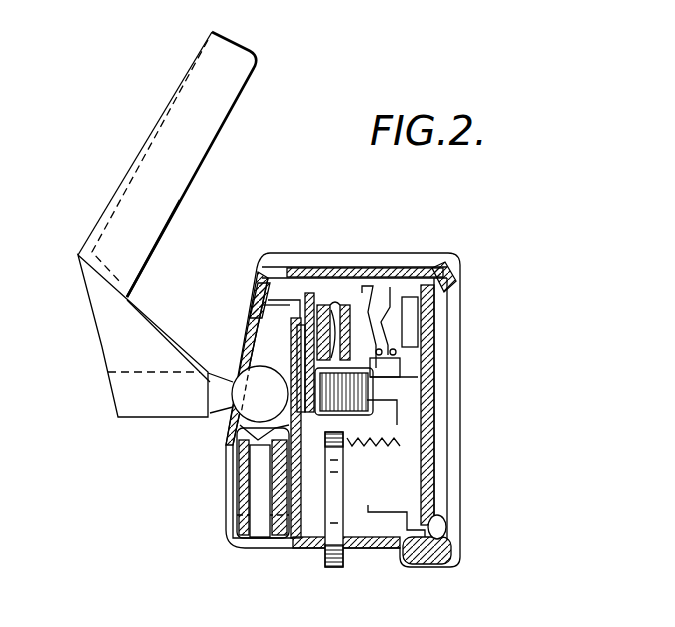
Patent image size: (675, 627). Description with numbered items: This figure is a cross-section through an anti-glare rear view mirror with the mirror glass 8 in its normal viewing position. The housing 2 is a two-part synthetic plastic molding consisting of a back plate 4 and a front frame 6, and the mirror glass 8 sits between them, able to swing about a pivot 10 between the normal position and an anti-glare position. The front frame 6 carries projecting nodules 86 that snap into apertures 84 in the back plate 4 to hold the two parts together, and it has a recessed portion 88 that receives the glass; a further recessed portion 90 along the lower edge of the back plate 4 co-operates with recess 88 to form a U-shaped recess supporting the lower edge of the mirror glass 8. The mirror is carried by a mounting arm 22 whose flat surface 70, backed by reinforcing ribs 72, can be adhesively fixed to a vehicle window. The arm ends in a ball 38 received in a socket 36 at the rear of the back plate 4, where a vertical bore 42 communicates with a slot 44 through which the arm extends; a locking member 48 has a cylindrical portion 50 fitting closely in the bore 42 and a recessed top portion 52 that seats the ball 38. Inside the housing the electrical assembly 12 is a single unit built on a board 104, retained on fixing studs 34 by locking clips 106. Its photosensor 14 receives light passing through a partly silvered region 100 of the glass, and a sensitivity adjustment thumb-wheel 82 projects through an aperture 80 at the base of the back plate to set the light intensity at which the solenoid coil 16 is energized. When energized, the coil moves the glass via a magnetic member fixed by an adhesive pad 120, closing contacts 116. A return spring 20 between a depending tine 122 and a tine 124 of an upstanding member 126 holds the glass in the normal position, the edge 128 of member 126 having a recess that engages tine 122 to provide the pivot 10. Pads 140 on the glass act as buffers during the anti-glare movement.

The housing 2 is at (482, 269).
The back plate part 4 is at (362, 300).
The front frame part 6 is at (455, 296).
The mirror glass 8 is at (433, 372).
The pivot 10 is at (362, 440).
The electrical assembly 12 is at (296, 288).
The photosensor 14 is at (343, 300).
The solenoid coil 16 is at (410, 392).
The return spring 20 is at (405, 500).
The mounting arm 22 is at (107, 343).
The fixing studs 34 is at (256, 298).
The socket 36 is at (216, 480).
The ball member 38 is at (252, 366).
The vertical bore 42 is at (265, 313).
The slot 44 is at (232, 468).
The locking member 48 is at (230, 513).
The cylindrical portion 50 is at (233, 498).
The recessed top portion 52 is at (238, 432).
The flat surface 70 is at (124, 175).
The reinforcing ribs 72 is at (178, 178).
The aperture 80 is at (357, 550).
The sensitivity adjustment thumb-wheel 82 is at (320, 563).
The apertures 84 is at (445, 255).
The projecting nodules 86 is at (447, 262).
The recessed portion 88 is at (432, 318).
The further recessed portion 90 is at (398, 552).
The partly silvered region 100 is at (438, 345).
The board 104 is at (322, 283).
The locking clips 106 is at (265, 540).
The contacts 116 is at (393, 285).
The adhesive pad 120 is at (400, 433).
The depending tine 122 is at (380, 470).
The tine 124 is at (446, 525).
The upstanding member 126 is at (280, 423).
The edge 128 is at (400, 456).
The pads 140 is at (420, 265).